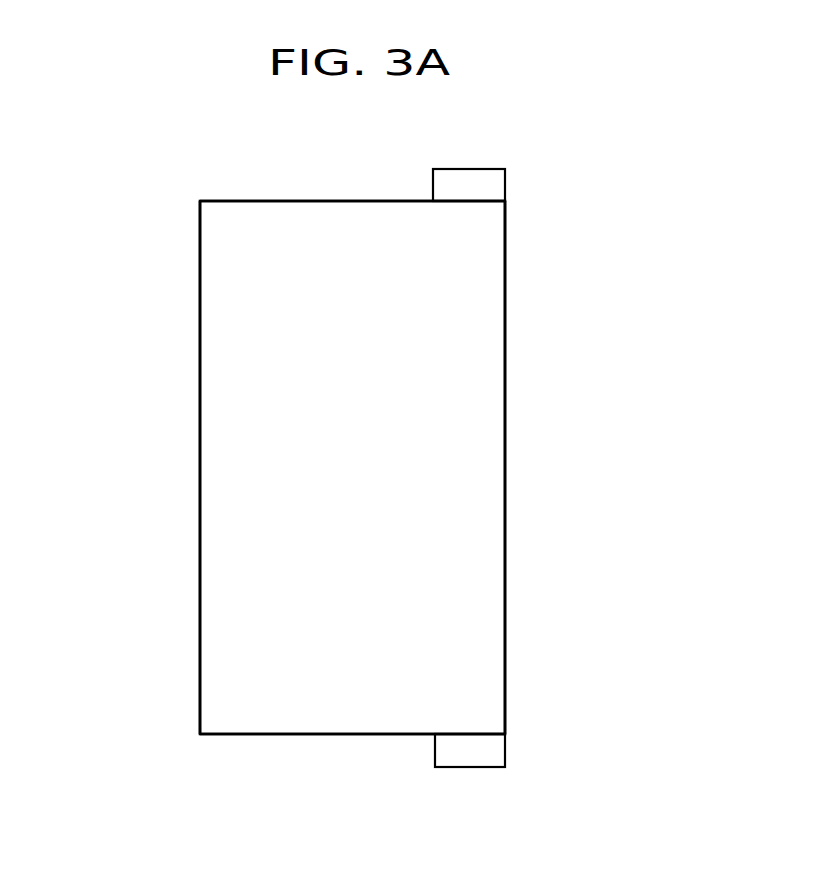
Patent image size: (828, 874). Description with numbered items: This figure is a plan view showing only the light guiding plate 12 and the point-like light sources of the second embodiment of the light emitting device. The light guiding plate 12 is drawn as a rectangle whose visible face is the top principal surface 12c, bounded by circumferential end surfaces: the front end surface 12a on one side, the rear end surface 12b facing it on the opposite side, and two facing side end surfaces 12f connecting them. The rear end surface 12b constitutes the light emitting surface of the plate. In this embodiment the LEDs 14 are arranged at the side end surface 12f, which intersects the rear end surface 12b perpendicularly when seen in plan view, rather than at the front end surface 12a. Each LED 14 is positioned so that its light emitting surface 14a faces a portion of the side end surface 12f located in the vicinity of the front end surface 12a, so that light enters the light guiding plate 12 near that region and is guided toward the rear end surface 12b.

The light guiding plate 12 is at (527, 383).
The front end surface 12a is at (505, 540).
The rear end surface 12b is at (200, 357).
The top principal surface 12c is at (386, 443).
The side end surface 12f is at (305, 201).
The LED 14 is at (522, 178).
The light emitting surface of the LED 14a is at (465, 201).